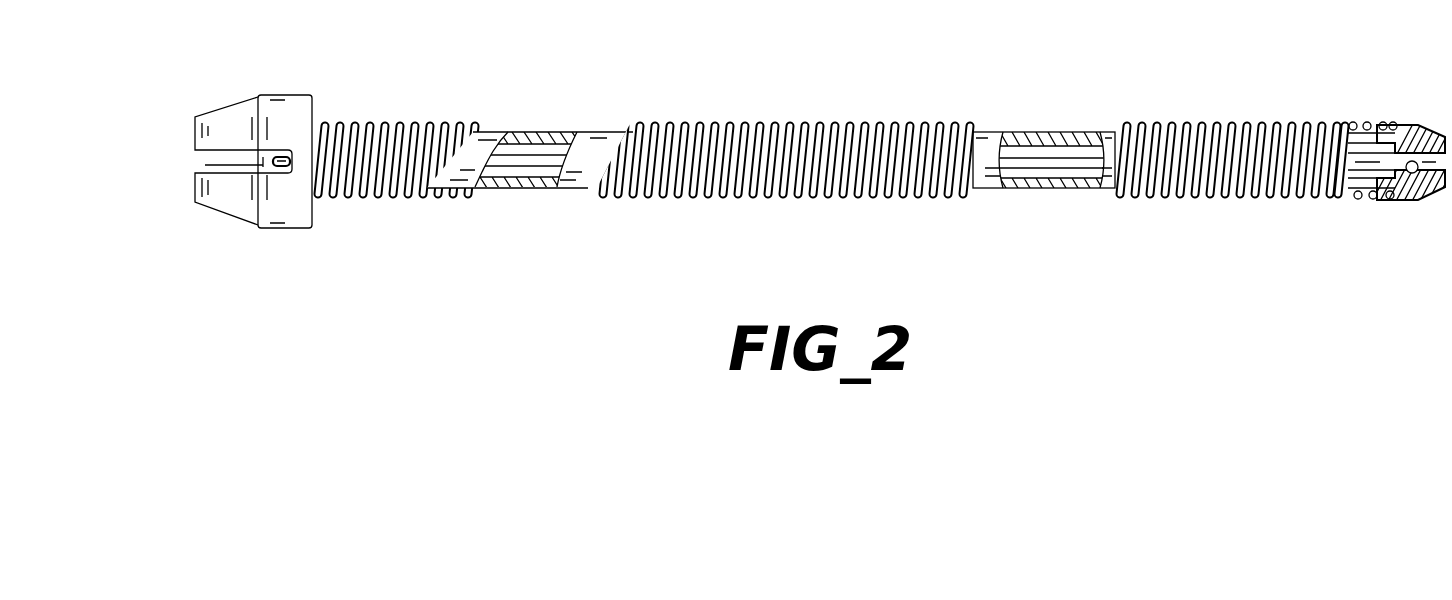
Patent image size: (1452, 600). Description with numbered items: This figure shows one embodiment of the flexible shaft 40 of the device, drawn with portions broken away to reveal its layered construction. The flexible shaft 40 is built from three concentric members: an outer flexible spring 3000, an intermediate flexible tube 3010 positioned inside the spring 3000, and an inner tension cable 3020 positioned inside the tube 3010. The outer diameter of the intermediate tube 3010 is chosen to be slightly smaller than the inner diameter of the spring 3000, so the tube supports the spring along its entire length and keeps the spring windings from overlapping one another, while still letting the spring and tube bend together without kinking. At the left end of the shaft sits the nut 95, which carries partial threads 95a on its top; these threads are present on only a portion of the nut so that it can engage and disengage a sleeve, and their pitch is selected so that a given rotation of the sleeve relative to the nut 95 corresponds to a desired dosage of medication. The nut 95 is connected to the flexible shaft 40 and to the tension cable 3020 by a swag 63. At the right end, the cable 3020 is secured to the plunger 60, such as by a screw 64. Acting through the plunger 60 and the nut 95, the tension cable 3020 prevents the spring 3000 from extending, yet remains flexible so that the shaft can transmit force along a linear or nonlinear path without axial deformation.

The flexible shaft 40 is at (645, 104).
The plunger 60 is at (1357, 163).
The swag 63 is at (243, 158).
The screw 64 is at (1415, 173).
The nut 95 is at (361, 160).
The partial threads 95a is at (293, 95).
The outer flexible spring 3000 is at (755, 198).
The intermediate flexible tube 3010 is at (1047, 161).
The inner tension cable 3020 is at (1067, 162).